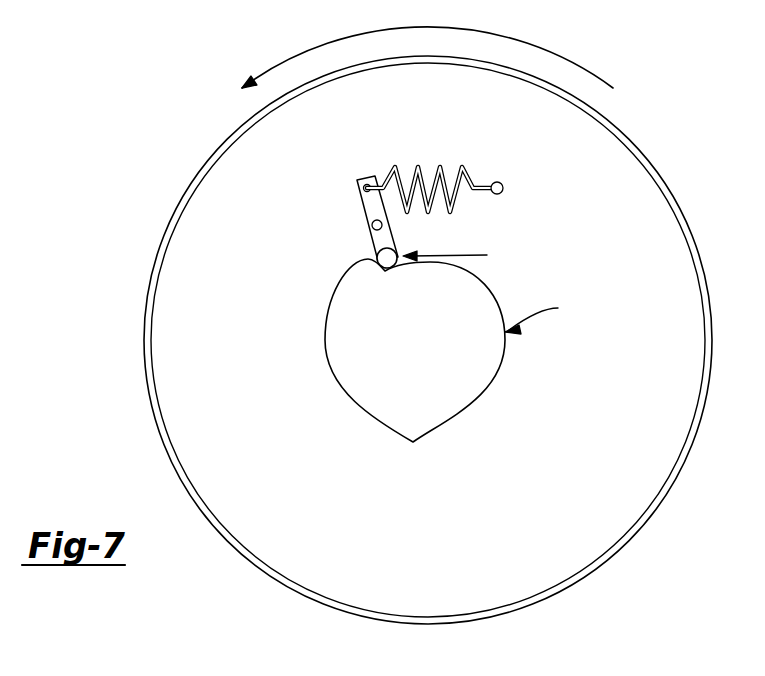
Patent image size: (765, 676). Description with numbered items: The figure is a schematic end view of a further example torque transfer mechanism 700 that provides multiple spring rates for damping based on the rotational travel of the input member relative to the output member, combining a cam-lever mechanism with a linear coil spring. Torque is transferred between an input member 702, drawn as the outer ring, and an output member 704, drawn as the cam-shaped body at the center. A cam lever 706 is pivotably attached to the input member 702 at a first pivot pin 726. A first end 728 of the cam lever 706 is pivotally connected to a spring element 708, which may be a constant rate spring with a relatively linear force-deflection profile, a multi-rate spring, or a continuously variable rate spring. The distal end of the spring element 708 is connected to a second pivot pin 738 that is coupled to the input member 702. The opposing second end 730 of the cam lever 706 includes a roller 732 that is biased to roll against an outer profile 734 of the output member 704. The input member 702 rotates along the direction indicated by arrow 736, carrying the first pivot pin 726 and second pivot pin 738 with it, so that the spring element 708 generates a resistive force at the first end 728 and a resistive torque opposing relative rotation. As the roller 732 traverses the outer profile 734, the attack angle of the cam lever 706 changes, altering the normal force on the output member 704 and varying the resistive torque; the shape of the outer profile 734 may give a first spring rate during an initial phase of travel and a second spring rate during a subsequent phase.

The torque transfer mechanism 700 is at (218, 112).
The input member 702 is at (184, 192).
The output member 704 is at (437, 352).
The cam lever 706 is at (359, 206).
The spring element 708 is at (467, 170).
The first pivot pin 726 is at (383, 225).
The first end 728 is at (357, 182).
The second end 730 is at (460, 255).
The roller 732 is at (378, 257).
The outer profile 734 is at (541, 307).
The arrow 736 is at (568, 59).
The second pivot pin 738 is at (503, 188).